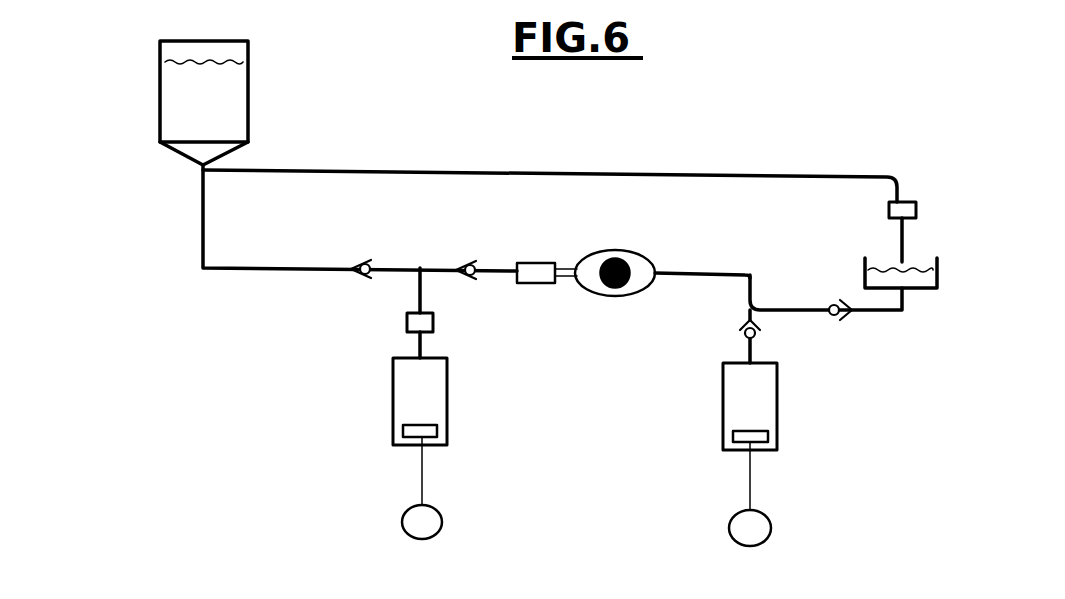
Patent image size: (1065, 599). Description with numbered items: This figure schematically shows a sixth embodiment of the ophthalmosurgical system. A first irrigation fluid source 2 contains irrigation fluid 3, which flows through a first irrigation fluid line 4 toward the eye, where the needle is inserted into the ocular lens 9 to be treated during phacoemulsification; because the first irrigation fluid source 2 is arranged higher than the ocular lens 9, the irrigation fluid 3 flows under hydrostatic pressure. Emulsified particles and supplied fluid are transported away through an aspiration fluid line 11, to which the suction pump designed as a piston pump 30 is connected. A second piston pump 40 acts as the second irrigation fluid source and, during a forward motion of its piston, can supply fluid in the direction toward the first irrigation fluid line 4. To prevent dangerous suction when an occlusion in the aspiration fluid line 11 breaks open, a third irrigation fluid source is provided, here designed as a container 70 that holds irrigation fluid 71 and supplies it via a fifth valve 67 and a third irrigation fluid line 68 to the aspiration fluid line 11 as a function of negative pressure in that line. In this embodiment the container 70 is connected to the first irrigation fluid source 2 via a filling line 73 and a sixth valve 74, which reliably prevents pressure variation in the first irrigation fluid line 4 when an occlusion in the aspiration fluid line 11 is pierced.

The first irrigation fluid source 2 is at (160, 98).
The irrigation fluid 3 is at (172, 135).
The first irrigation fluid line 4 is at (239, 275).
The ocular lens 9 is at (613, 262).
The aspiration fluid line 11 is at (737, 270).
The piston pump 30 is at (780, 405).
The second piston pump 40 is at (395, 402).
The fifth valve 67 is at (850, 320).
The third irrigation fluid line 68 is at (905, 310).
The container 70 is at (937, 287).
The irrigation fluid 71 is at (915, 263).
The filling line 73 is at (748, 172).
The sixth valve 74 is at (917, 205).